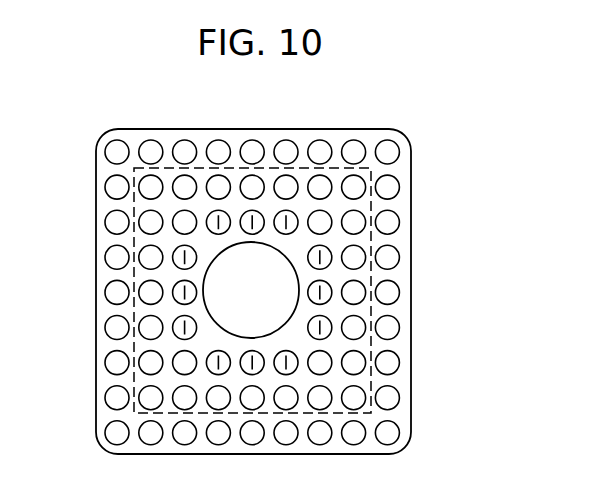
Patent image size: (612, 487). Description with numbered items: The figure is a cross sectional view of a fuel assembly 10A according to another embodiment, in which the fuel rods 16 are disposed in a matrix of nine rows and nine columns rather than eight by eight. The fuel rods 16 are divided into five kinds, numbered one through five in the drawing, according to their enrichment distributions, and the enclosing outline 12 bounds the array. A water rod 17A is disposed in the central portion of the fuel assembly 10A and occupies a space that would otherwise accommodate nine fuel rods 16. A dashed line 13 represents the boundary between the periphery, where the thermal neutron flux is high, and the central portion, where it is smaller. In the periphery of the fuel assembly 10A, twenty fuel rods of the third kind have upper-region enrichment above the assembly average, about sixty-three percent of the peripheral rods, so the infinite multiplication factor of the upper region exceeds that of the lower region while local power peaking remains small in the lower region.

The fuel assembly 10A is at (96, 283).
The package substrate 12 is at (363, 130).
The dashed line 13 is at (371, 378).
The fuel rods 16 is at (399, 222).
The water rod 17A is at (299, 300).